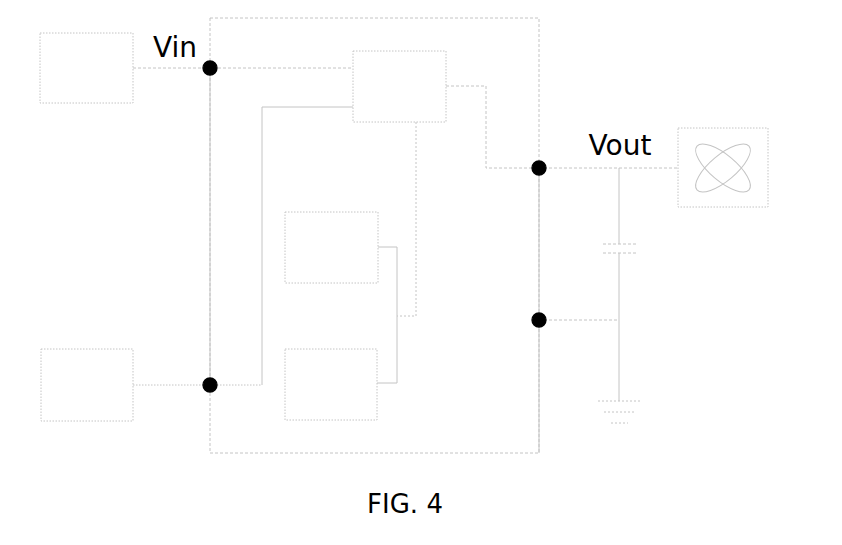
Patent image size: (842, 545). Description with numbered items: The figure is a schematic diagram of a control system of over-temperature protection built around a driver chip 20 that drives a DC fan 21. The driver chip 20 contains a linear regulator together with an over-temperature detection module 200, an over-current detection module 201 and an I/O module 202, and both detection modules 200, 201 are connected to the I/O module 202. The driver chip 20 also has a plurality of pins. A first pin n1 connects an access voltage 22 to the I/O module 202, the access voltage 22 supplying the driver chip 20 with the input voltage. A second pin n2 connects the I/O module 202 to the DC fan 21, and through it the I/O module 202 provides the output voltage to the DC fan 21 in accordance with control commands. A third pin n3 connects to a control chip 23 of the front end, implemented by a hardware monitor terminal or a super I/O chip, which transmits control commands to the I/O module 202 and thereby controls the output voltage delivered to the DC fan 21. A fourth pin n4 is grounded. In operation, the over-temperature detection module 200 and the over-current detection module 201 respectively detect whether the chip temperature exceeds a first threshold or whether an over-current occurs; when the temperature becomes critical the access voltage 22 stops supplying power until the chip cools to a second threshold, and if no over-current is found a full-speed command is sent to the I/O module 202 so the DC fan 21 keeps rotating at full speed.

The driver chip 20 is at (374, 235).
The DC fan 21 is at (720, 207).
The access voltage 22 is at (86, 68).
The control chip 23 is at (87, 385).
The over-temperature detection module 200 is at (331, 247).
The over-current detection module 201 is at (331, 384).
The I/O module 202 is at (399, 86).
The first pin n1 is at (227, 52).
The second pin n2 is at (521, 152).
The third pin n3 is at (230, 372).
The fourth pin n4 is at (522, 306).